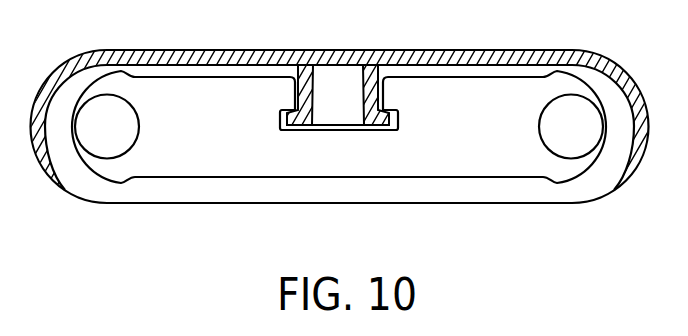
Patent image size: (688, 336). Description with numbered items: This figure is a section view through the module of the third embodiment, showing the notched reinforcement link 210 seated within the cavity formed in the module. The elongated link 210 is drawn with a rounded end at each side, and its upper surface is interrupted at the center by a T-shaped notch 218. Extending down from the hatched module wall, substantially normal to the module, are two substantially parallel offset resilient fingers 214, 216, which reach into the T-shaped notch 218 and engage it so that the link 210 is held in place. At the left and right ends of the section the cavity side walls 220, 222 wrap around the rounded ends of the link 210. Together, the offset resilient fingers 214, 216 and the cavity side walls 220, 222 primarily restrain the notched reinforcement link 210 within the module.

The notched reinforcement link 210 is at (235, 161).
The offset resilient finger 214 is at (327, 80).
The offset resilient finger 216 is at (359, 93).
The T-shaped notch 218 is at (338, 131).
The cavity side wall 220 is at (66, 190).
The cavity side wall 222 is at (626, 166).